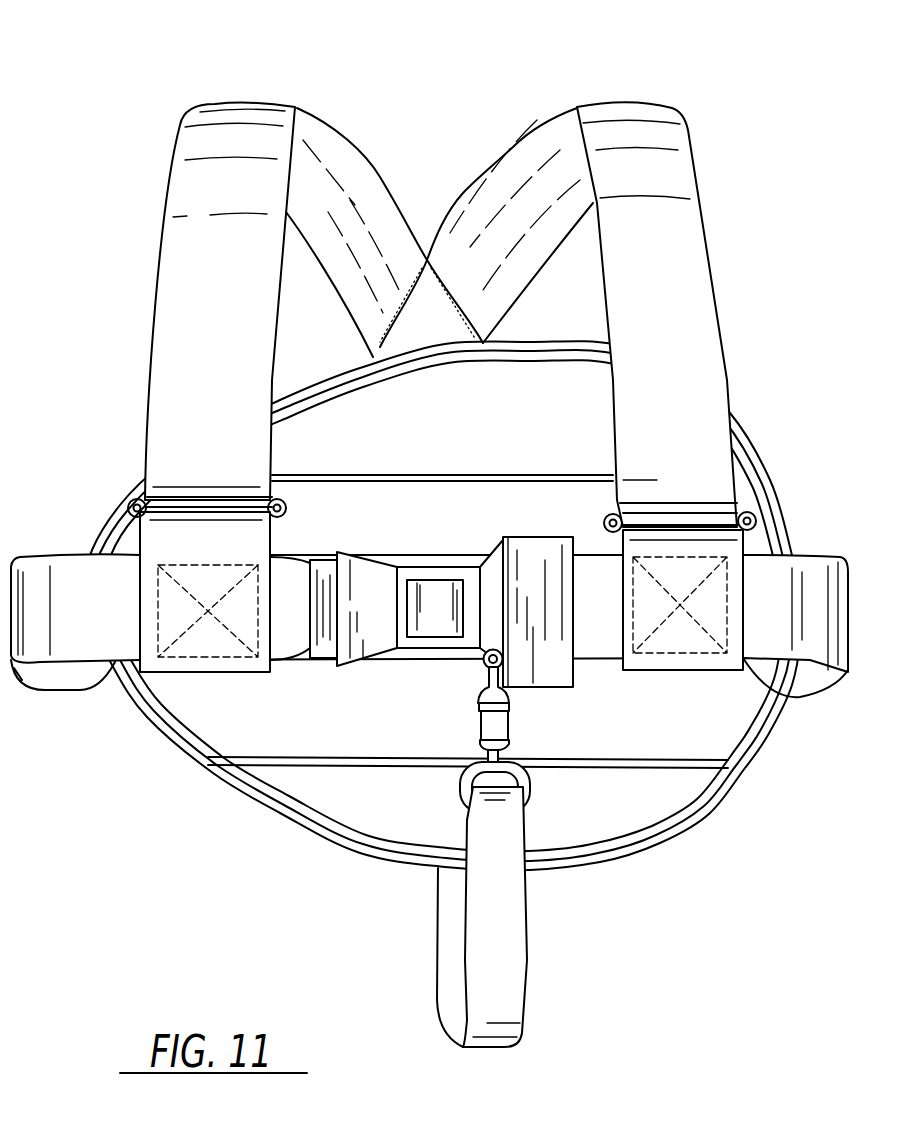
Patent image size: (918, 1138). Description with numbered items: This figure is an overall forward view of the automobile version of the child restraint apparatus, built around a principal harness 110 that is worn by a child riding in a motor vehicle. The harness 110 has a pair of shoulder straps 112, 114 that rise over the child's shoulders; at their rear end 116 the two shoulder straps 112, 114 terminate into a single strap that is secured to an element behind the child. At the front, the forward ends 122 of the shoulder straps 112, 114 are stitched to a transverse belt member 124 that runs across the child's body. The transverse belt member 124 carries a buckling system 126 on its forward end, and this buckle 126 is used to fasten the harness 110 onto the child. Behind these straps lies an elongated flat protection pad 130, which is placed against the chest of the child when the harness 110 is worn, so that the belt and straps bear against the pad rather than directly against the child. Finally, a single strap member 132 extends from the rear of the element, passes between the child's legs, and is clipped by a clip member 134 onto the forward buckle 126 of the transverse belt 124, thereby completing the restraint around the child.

The principal harness 110 is at (757, 368).
The shoulder strap 112 is at (665, 190).
The shoulder strap 114 is at (228, 147).
The rear end of the shoulder straps 116 is at (470, 200).
The forward ends of the straps 122 is at (170, 468).
The transverse belt member 124 is at (80, 627).
The buckling system 126 is at (436, 666).
The elongated flat protection pad 130 is at (503, 441).
The single strap member 132 is at (490, 958).
The clip member 134 is at (487, 727).